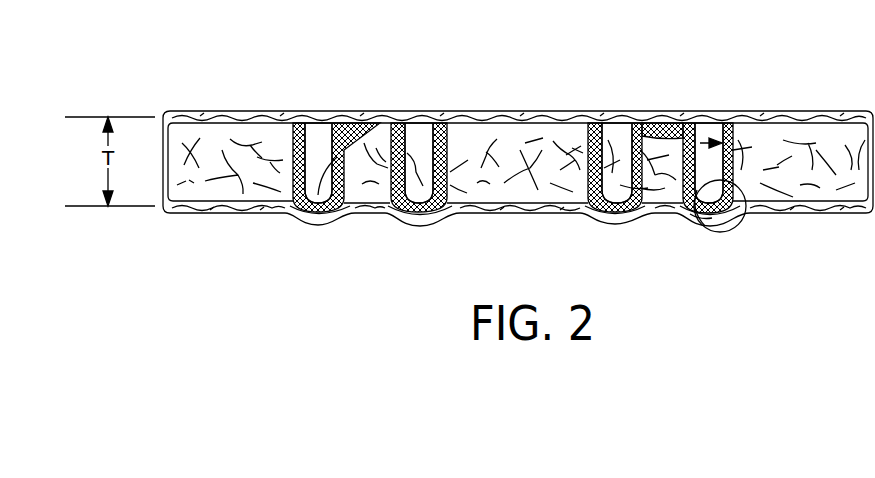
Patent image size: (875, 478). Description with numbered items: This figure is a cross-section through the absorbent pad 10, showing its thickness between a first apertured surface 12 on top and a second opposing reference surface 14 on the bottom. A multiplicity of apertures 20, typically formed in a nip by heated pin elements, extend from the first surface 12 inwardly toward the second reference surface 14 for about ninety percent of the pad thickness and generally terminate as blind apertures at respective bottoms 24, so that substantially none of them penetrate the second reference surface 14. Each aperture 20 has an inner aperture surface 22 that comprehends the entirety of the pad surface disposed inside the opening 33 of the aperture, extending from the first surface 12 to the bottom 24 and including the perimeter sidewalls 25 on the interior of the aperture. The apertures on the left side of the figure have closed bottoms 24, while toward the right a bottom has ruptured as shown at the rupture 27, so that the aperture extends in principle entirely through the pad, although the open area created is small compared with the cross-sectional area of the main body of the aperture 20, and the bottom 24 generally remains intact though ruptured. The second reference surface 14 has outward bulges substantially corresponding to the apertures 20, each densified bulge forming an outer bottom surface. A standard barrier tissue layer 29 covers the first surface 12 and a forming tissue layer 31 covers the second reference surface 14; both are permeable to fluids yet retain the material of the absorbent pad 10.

The absorbent pad 10 is at (570, 109).
The first apertured surface 12 is at (487, 112).
The second reference surface 14 is at (810, 207).
The apertures 20 is at (317, 137).
The inner aperture surface 22 is at (673, 127).
The bottom 24 is at (340, 155).
The perimeter sidewalls 25 is at (747, 208).
The rupture 27 is at (717, 223).
The barrier tissue layer 29 is at (800, 113).
The forming tissue layer 31 is at (775, 215).
The opening 33 is at (325, 124).